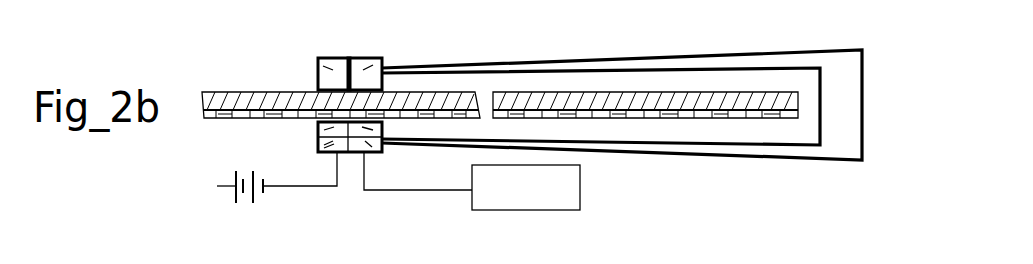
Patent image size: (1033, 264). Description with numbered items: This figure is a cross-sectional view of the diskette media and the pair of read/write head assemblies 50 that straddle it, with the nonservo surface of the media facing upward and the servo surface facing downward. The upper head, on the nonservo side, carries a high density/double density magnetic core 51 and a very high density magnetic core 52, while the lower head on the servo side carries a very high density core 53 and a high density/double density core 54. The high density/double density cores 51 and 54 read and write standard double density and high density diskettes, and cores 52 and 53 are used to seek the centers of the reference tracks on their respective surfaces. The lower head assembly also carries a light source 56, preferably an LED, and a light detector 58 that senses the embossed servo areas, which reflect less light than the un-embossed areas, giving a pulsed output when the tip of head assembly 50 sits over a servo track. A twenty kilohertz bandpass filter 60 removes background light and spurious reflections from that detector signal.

The read/write head assembly 50 is at (808, 50).
The HD/DD magnetic core 51 is at (319, 60).
The VHD magnetic core 52 is at (379, 58).
The VHD core 53 is at (320, 131).
The HD/DD core 54 is at (375, 130).
The light source 56 is at (320, 149).
The light detector 58 is at (382, 153).
The bandpass filter 60 is at (516, 194).